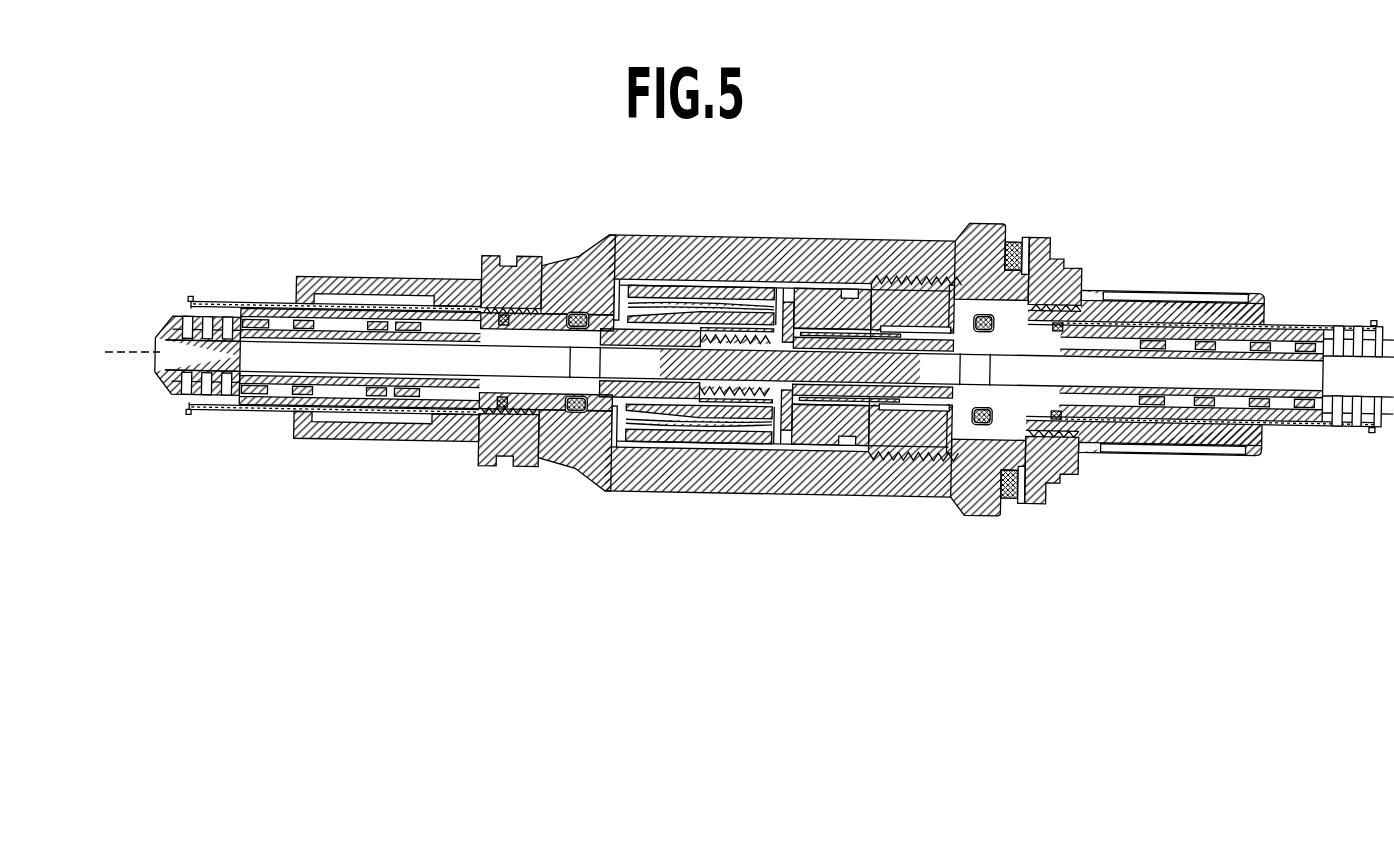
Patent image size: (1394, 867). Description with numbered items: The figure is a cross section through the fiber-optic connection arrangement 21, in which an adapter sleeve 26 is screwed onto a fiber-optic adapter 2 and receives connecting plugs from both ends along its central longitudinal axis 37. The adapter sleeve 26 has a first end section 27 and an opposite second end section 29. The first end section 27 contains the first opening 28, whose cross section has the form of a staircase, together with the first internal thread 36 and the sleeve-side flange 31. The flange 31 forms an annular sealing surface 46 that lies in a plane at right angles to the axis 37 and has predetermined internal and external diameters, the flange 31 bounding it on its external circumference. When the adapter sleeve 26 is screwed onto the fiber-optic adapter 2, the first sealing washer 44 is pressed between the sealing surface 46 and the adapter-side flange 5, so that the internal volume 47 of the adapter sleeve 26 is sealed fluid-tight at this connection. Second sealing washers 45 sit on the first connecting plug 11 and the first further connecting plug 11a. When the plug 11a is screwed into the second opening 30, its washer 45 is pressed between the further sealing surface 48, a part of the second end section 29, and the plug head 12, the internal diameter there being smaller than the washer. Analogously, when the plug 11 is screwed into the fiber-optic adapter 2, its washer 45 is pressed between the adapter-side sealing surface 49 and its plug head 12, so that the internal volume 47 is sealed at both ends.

The fiber-optic adapter 2 is at (1052, 480).
The adapter-side flange 5 is at (1047, 238).
The first connecting plug 11 is at (1292, 438).
The first further connecting plug 11a is at (381, 440).
The plug head 12 is at (603, 300).
The fiber-optic connection arrangement 21 is at (497, 503).
The adapter sleeve 26 is at (691, 239).
The first end section 27 is at (912, 237).
The first opening 28 is at (987, 510).
The second end section 29 is at (550, 278).
The second opening 30 is at (439, 303).
The sleeve-side flange 31 is at (970, 237).
The first internal thread 36 is at (880, 278).
The central longitudinal axis 37 is at (136, 354).
The first sealing washer 44 is at (1005, 258).
The second sealing washer 45 is at (578, 410).
The sealing surface 46 is at (993, 240).
The internal volume 47 is at (725, 447).
The further sealing surface 48 is at (595, 307).
The sealing surface 49 is at (975, 460).